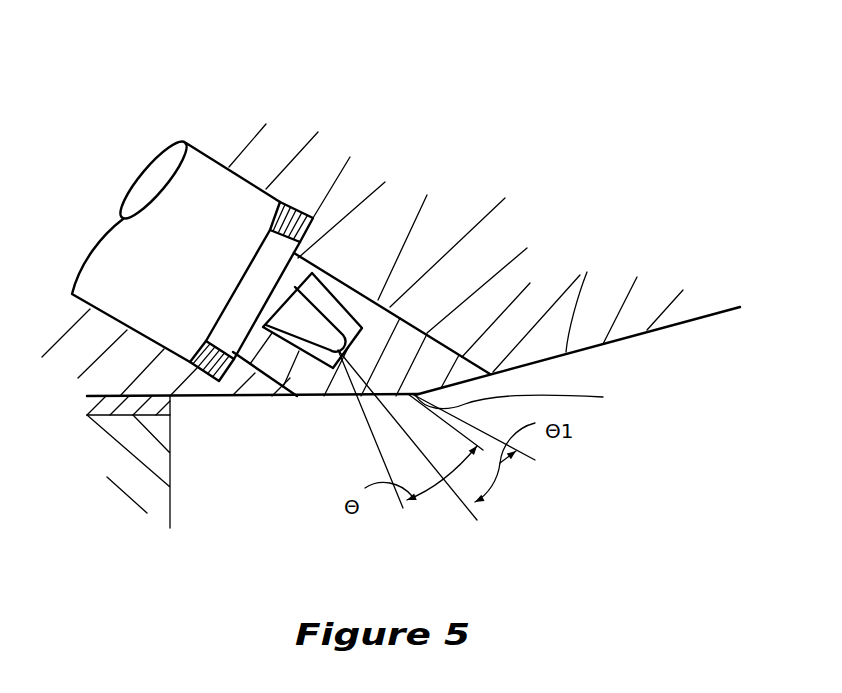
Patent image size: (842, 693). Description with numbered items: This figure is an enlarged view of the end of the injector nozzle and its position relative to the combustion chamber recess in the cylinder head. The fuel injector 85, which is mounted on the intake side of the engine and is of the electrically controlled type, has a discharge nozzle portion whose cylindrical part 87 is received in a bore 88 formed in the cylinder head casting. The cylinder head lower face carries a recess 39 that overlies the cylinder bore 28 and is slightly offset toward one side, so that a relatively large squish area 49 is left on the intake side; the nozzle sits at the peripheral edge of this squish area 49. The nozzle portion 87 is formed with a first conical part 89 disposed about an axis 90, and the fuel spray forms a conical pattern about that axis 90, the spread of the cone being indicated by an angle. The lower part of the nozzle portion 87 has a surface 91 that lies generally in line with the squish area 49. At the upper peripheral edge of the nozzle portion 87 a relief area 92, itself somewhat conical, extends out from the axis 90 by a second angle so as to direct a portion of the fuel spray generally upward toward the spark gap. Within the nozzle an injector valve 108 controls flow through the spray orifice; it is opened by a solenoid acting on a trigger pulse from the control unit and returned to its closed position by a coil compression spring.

The fuel injector 85 is at (120, 148).
The injector valve 108 is at (358, 320).
The cylindrical part 87 is at (403, 347).
The first conical part 89 is at (540, 360).
The bore 88 is at (560, 355).
The recess 39 is at (615, 341).
The relief area 92 is at (530, 402).
The squish area 49 is at (205, 397).
The surface 91 is at (346, 356).
The cylinder bore 28 is at (170, 487).
The axis 90 is at (474, 510).